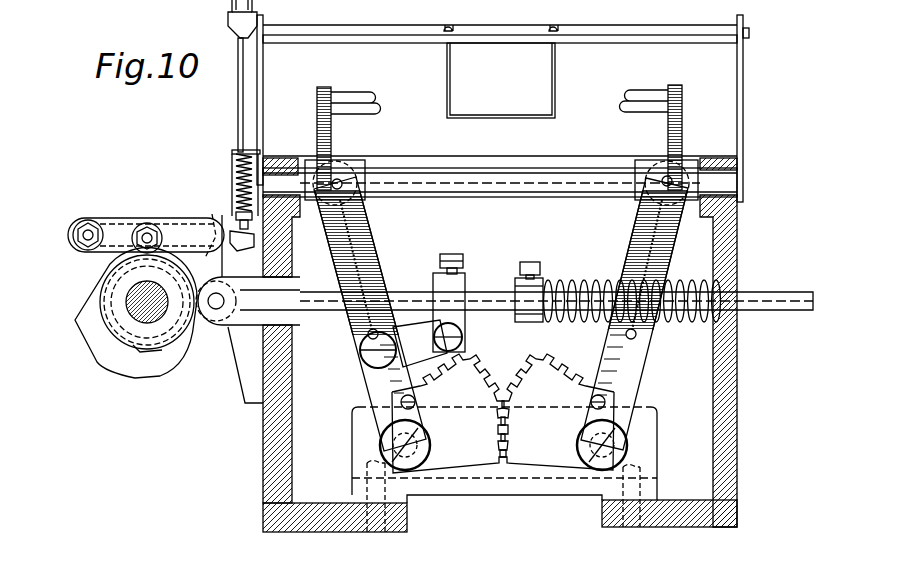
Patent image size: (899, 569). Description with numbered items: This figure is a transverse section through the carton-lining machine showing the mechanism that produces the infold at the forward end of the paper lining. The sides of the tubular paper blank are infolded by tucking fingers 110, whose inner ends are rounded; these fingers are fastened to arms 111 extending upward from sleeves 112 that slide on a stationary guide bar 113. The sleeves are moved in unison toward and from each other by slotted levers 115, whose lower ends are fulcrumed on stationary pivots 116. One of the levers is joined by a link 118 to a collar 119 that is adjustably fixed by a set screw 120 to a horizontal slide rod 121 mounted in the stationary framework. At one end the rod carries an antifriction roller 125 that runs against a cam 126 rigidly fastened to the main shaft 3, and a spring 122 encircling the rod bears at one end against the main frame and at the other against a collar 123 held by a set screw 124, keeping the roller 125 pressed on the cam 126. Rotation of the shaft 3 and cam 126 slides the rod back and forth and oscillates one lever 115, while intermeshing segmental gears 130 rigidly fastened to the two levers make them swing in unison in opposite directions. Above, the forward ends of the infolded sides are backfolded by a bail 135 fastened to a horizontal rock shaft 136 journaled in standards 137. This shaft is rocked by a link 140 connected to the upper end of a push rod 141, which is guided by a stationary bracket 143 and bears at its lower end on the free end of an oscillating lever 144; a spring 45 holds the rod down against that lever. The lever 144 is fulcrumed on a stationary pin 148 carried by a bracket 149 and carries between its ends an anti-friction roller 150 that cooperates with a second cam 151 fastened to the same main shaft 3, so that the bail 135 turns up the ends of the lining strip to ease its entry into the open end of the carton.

The shaft 3 is at (135, 318).
The spring 45 is at (237, 180).
The fingers 110 is at (360, 100).
The arms 111 is at (317, 120).
The sleeves 112 is at (366, 166).
The guide bar 113 is at (495, 184).
The slotted levers 115 is at (372, 244).
The pivots 116 is at (422, 444).
The link 118 is at (395, 378).
The collar 119 is at (466, 285).
The set screw 120 is at (455, 253).
The slide rod 121 is at (398, 292).
The spring 122 is at (598, 289).
The collar 123 is at (545, 282).
The set screw 124 is at (532, 259).
The antifriction roller 125 is at (228, 325).
The cam 126 is at (172, 377).
The segmental gears 130 is at (478, 381).
The bail 135 is at (448, 92).
The rock shaft 136 is at (598, 34).
The standards 137 is at (262, 70).
The link 140 is at (230, 15).
The push rod 141 is at (240, 118).
The bracket 143 is at (236, 152).
The oscillating lever 144 is at (218, 216).
The pin 148 is at (80, 228).
The bracket 149 is at (105, 222).
The anti-friction roller 150 is at (148, 225).
The cam 151 is at (128, 325).